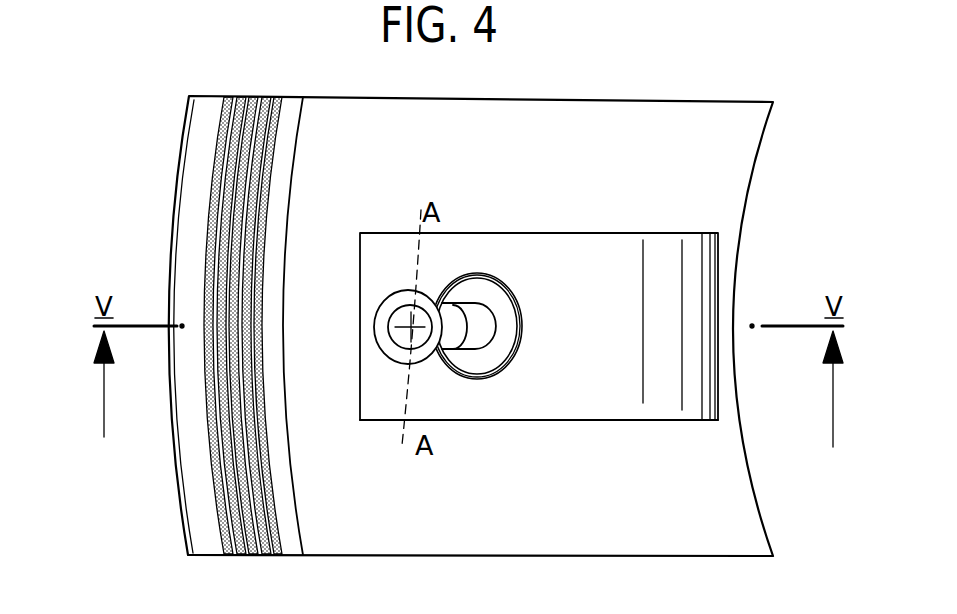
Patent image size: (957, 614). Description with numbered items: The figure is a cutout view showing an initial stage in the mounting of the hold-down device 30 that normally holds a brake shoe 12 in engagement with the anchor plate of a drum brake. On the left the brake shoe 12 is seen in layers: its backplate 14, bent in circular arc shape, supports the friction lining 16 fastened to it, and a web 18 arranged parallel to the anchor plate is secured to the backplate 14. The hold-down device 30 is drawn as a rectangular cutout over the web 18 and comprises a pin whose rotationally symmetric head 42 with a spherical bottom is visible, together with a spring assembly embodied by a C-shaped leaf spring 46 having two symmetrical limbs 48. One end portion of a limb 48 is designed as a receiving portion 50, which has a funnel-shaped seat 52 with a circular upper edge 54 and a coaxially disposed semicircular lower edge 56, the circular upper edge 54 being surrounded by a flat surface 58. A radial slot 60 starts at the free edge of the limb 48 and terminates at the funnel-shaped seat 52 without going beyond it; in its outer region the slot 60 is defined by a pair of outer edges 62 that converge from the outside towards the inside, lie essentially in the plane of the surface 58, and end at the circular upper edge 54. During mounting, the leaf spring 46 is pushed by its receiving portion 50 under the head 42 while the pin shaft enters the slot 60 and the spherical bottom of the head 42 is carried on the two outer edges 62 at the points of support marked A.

The brake shoe 12 is at (164, 225).
The backplate 14 is at (283, 490).
The friction lining 16 is at (251, 537).
The web 18 is at (705, 527).
The hold-down device 30 is at (523, 210).
The head 42 is at (390, 325).
The C-shaped leaf spring 46 is at (652, 220).
The limb 48 is at (657, 393).
The receiving portion 50 is at (483, 393).
The funnel-shaped seat 52 is at (501, 291).
The circular upper edge 54 is at (521, 305).
The semicircular lower edge 56 is at (497, 336).
The flat surface 58 is at (547, 399).
The radial slot 60 is at (360, 344).
The outer edges 62 is at (392, 294).